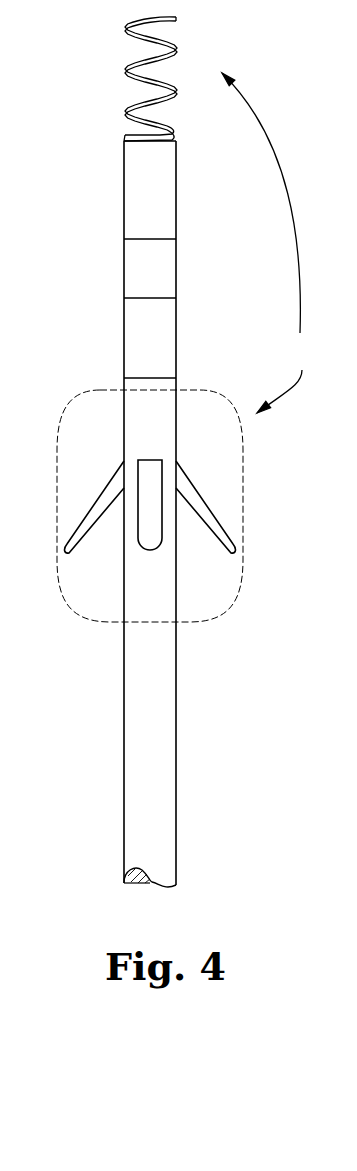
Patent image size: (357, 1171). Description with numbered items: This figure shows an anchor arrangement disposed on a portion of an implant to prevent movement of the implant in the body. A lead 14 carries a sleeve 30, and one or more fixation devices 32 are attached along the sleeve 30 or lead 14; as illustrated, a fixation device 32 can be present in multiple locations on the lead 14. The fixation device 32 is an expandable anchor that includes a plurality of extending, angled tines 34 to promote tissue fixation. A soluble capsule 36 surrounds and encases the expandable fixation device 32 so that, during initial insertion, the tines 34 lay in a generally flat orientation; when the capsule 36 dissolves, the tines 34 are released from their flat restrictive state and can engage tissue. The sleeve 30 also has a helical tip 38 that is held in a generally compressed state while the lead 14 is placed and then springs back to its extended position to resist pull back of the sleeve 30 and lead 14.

The lead 14 is at (176, 179).
The sleeve 30 is at (176, 728).
The fixation device 32 is at (269, 243).
The tines 34 is at (217, 515).
The soluble capsule 36 is at (230, 582).
The helical tip 38 is at (125, 68).